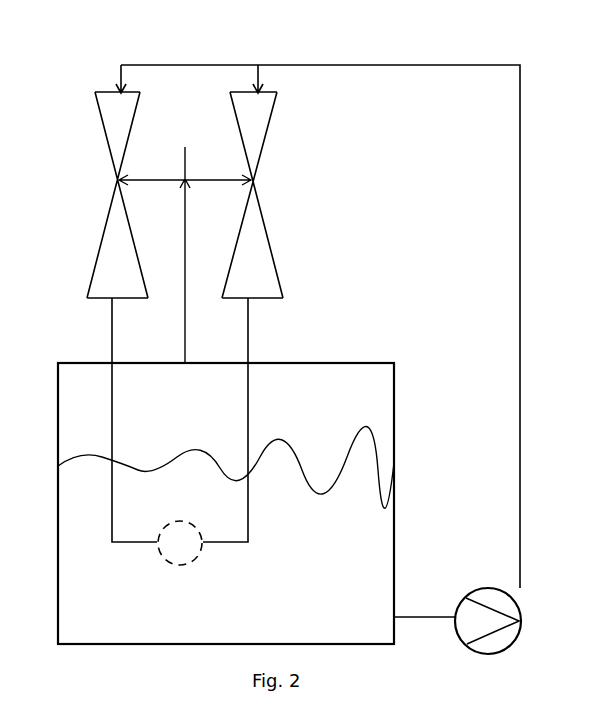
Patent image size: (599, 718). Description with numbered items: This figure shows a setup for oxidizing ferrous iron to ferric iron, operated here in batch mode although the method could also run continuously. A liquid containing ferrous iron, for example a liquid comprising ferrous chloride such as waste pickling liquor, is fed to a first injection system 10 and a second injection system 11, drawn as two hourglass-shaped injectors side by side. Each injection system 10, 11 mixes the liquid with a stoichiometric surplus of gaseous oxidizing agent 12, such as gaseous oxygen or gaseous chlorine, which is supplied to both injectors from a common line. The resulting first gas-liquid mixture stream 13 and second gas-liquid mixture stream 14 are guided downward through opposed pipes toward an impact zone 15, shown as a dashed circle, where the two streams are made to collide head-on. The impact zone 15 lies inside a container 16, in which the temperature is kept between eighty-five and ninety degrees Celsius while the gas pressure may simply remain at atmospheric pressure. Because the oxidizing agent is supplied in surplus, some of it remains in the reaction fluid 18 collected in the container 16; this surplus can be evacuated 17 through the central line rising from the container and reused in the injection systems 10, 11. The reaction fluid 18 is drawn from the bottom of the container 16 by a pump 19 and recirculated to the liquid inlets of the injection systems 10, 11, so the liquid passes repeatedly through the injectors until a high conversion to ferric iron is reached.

The first injection system 10 is at (108, 162).
The second injection system 11 is at (263, 168).
The gaseous oxidizing agent 12 is at (185, 151).
The first gas-liquid mixture stream 13 is at (108, 340).
The second gas-liquid mixture stream 14 is at (255, 335).
The impact zone 15 is at (176, 568).
The container 16 is at (394, 428).
The evacuation of surplus oxidizing agent 17 is at (166, 255).
The reaction fluid 18 is at (355, 575).
The pump 19 is at (478, 590).